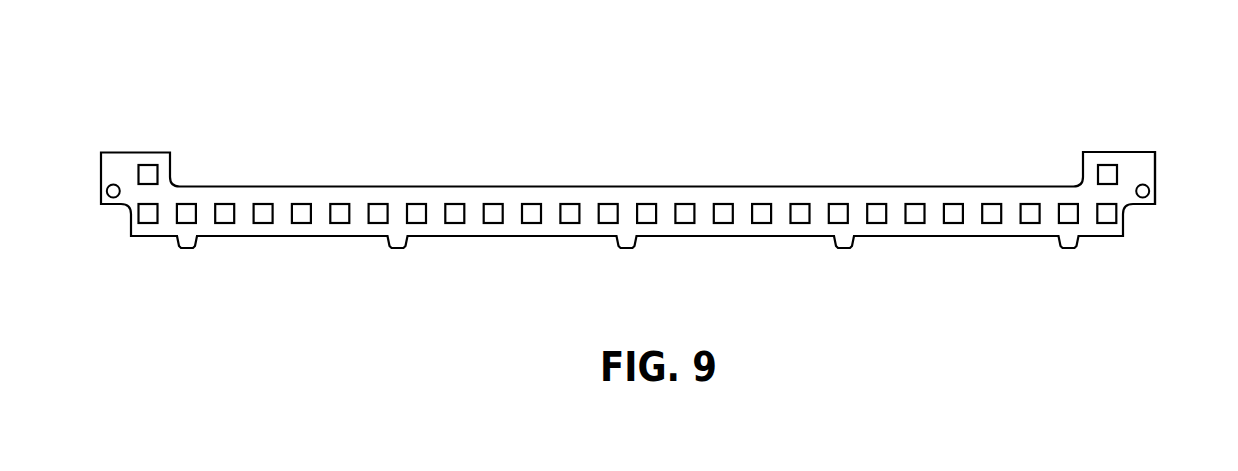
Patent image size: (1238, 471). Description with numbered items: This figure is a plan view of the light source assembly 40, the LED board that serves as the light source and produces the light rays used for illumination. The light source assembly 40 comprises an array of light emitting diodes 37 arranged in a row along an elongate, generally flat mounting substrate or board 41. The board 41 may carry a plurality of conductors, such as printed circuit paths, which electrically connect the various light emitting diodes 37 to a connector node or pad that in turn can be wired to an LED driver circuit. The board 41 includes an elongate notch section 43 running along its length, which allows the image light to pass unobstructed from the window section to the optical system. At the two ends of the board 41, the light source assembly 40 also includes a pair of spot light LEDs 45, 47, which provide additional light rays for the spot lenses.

The light source assembly 40 is at (136, 56).
The board 41 is at (1125, 144).
The notch section 43 is at (852, 186).
The spot light LED 45 is at (159, 175).
The spot light LED 47 is at (1096, 172).
The light emitting diodes 37 is at (527, 203).